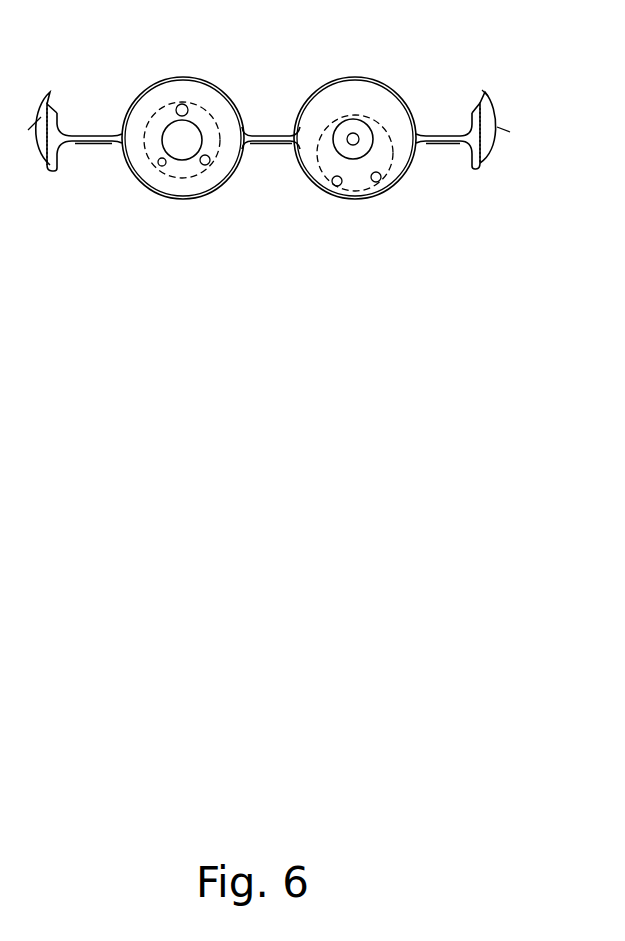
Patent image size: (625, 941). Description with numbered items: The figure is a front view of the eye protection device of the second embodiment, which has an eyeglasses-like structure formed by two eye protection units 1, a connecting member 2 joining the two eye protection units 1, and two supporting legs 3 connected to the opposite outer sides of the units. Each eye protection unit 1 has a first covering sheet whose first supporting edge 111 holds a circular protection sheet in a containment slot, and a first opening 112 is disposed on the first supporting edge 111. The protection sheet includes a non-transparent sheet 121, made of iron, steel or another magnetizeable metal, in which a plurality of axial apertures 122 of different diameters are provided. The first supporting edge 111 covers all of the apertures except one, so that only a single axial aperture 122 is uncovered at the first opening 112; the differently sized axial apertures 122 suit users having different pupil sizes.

The eye protection unit 1 is at (410, 220).
The connecting member 2 is at (267, 140).
The supporting leg 3 is at (477, 131).
The first supporting edge 111 is at (193, 197).
The first opening 112 is at (168, 130).
The non-transparent sheet 121 is at (205, 118).
The axial aperture 122 is at (162, 163).